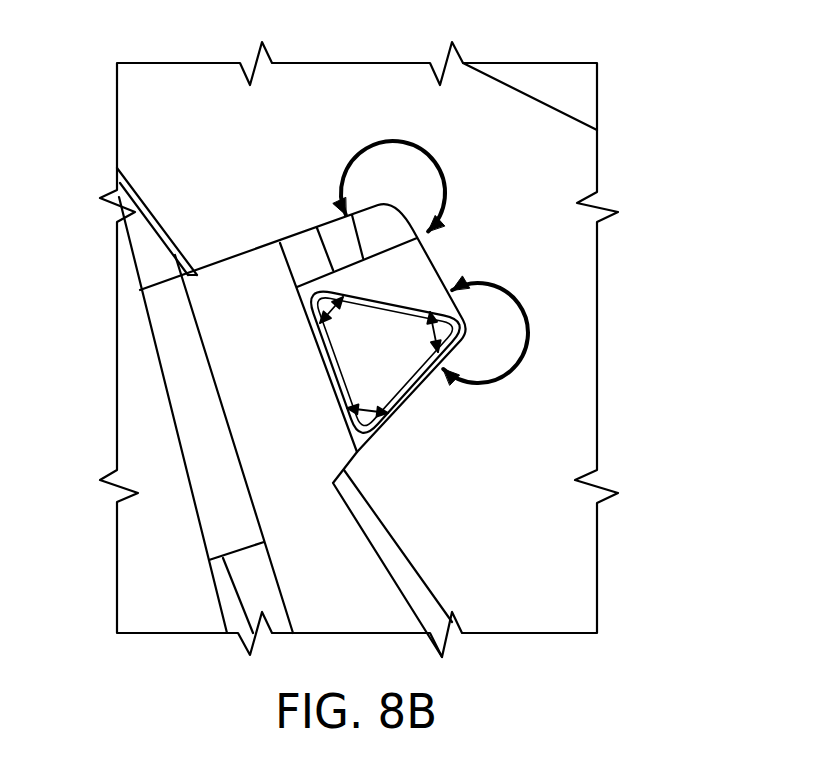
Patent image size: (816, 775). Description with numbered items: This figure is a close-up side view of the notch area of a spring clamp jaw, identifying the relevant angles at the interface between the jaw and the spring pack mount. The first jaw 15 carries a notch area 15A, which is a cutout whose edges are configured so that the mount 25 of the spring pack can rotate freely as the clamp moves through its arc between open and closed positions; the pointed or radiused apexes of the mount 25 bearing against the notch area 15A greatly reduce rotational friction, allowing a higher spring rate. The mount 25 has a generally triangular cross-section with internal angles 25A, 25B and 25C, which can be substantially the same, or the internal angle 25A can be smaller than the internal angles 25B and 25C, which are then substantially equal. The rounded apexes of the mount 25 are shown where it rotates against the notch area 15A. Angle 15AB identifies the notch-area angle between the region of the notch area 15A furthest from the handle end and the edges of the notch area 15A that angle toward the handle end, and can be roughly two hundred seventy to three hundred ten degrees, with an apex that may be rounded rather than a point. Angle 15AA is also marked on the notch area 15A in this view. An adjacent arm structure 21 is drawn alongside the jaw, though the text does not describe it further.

The first jaw 15 is at (594, 177).
The notch area 15A is at (299, 228).
The angle of the notch area 15AA is at (445, 192).
The angle 15AB is at (533, 268).
The arm 21 is at (108, 410).
The mount 25 is at (407, 371).
The internal angle 25A is at (430, 328).
The internal angle 25B is at (366, 403).
The internal angle 25C is at (343, 318).